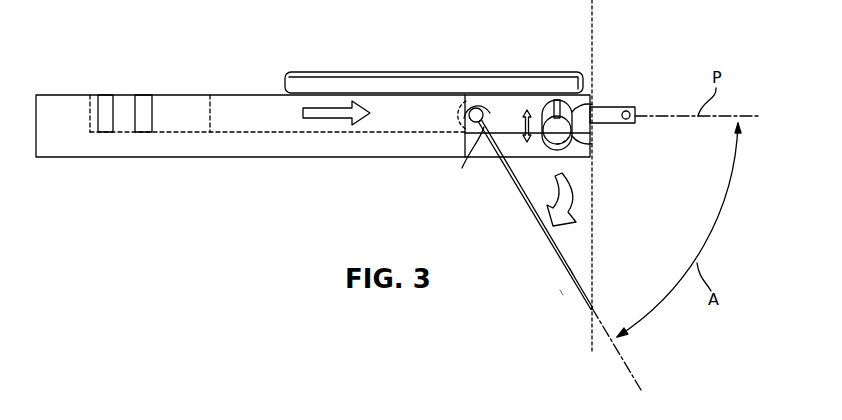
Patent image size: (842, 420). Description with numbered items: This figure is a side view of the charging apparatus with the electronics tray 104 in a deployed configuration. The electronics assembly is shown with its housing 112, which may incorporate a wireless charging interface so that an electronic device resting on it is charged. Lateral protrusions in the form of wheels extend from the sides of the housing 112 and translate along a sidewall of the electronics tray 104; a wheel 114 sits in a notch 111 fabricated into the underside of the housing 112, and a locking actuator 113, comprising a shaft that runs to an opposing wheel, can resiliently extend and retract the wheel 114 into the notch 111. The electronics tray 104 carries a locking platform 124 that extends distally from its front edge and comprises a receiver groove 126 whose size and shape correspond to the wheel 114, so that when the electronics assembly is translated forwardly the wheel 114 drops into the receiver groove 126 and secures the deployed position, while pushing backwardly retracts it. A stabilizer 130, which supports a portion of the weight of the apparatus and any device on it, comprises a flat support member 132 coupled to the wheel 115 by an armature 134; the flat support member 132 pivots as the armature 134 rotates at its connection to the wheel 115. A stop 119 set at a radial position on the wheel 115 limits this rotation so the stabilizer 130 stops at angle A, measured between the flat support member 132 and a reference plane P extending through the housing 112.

The electronics tray 104 is at (175, 166).
The notch 111 is at (600, 106).
The housing 112 is at (273, 122).
The locking actuator 113 is at (551, 99).
The wheel 114 is at (565, 152).
The wheel 115 is at (477, 99).
The stop 119 is at (477, 161).
The locking platform 124 is at (581, 181).
The receiver groove 126 is at (590, 148).
The stabilizer 130 is at (549, 280).
The flat support member 132 is at (576, 272).
The armature 134 is at (528, 212).